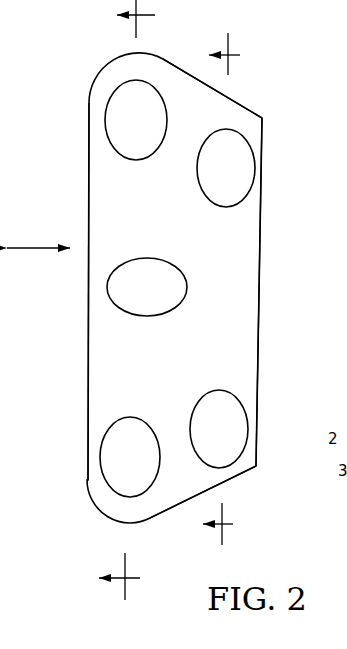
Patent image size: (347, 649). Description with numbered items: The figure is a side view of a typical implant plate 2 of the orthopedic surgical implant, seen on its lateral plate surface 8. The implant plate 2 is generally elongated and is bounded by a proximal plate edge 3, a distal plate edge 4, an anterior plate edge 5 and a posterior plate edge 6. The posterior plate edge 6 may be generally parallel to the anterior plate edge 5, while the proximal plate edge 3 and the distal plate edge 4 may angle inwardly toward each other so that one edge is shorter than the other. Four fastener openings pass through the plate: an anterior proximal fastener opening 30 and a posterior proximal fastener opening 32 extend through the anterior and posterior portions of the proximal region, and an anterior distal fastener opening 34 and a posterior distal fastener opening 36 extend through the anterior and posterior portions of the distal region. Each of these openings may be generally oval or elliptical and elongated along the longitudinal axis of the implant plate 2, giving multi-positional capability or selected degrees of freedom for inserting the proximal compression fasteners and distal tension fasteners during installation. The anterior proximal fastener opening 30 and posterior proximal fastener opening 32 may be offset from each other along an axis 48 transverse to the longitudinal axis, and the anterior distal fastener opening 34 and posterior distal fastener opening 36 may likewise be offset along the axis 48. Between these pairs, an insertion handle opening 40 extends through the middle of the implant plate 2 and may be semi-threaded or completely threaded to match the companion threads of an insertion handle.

The implant plate 2 is at (266, 111).
The proximal plate edge 3 is at (226, 93).
The distal plate edge 4 is at (250, 470).
The anterior plate edge 5 is at (88, 212).
The posterior plate edge 6 is at (262, 265).
The lateral plate surface 8 is at (233, 262).
The anterior proximal fastener opening 30 is at (136, 112).
The posterior proximal fastener opening 32 is at (224, 163).
The anterior distal fastener opening 34 is at (130, 443).
The posterior distal fastener opening 36 is at (215, 425).
The insertion handle opening 40 is at (145, 279).
The axis 48 is at (43, 247).